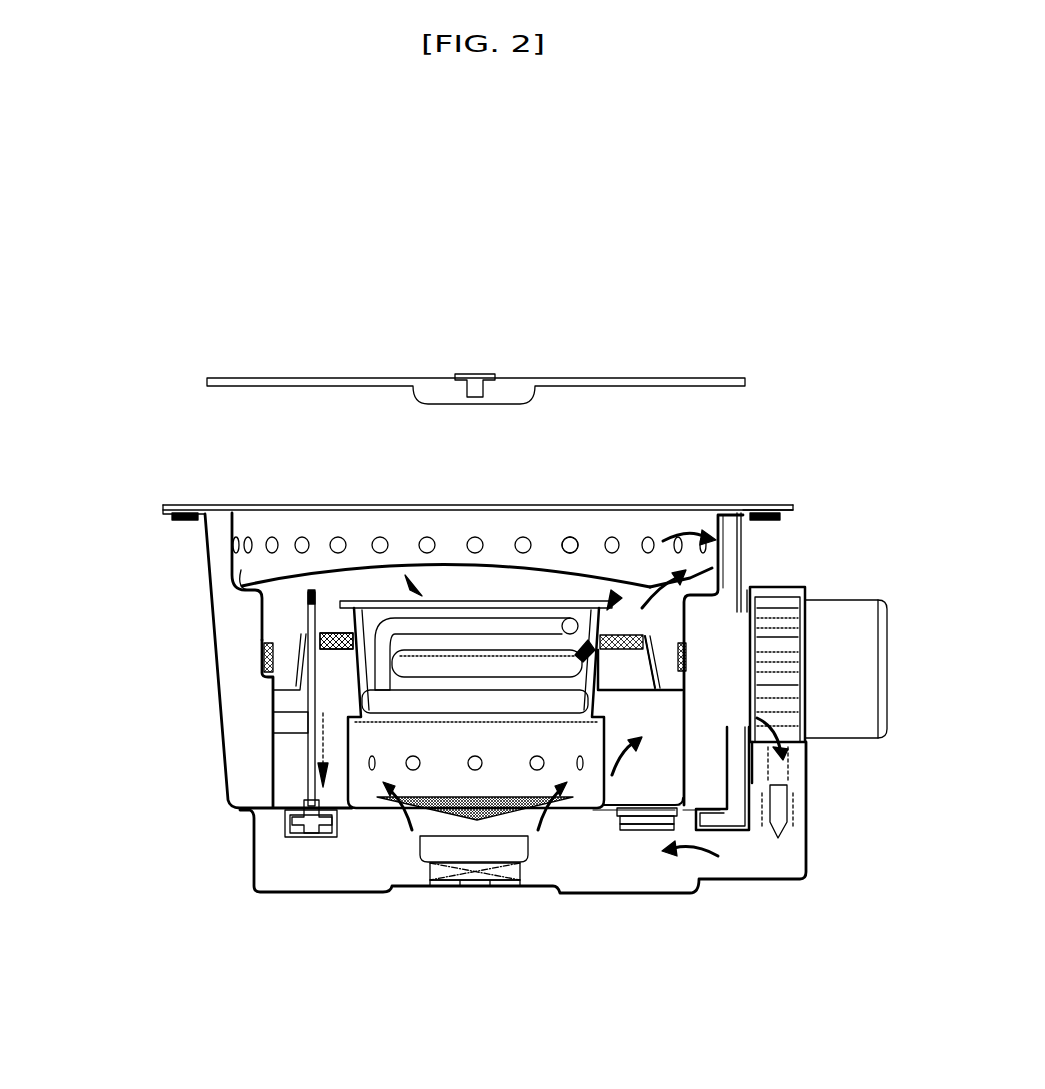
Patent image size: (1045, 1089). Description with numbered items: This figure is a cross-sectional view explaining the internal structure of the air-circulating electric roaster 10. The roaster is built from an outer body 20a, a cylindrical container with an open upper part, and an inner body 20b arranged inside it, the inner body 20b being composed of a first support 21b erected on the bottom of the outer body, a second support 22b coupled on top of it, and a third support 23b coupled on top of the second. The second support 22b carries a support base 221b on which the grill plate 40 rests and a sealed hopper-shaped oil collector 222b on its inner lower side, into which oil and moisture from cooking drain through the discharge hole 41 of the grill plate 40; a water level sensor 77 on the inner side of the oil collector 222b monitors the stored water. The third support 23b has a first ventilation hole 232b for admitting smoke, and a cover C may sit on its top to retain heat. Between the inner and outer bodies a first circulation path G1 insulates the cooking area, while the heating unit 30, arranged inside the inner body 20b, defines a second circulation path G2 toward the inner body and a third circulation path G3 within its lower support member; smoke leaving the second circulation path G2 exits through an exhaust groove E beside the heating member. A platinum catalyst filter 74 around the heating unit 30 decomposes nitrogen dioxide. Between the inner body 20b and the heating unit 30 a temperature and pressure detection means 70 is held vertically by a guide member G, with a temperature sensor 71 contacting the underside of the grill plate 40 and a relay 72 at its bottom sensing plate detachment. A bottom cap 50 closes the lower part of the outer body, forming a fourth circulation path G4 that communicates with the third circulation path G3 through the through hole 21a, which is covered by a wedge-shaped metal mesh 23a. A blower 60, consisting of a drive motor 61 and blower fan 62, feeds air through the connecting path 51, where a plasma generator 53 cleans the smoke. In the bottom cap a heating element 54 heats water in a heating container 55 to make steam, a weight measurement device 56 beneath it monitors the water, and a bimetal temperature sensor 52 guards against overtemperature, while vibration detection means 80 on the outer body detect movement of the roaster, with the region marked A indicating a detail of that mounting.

The air-circulating electric roaster 10 is at (766, 351).
The cover C is at (232, 378).
The detail region A is at (787, 493).
The exhaust groove E is at (618, 592).
The guide member G is at (337, 805).
The first circulation path G1 is at (721, 735).
The second circulation path G2 is at (667, 790).
The third circulation path G3 is at (490, 755).
The fourth circulation path G4 is at (609, 856).
The outer body 20a is at (228, 773).
The inner body 20b is at (113, 592).
The through hole 21a is at (398, 810).
The first support 21b is at (270, 722).
The second support 22b is at (262, 634).
The mesh 23a is at (520, 870).
The third support 23b is at (230, 545).
The support base 221b is at (258, 590).
The oil collector 222b is at (300, 722).
The first ventilation hole 232b is at (597, 547).
The heating unit 30 is at (412, 575).
The grill plate 40 is at (497, 567).
The discharge hole 41 is at (665, 580).
The bottom cap 50 is at (255, 860).
The connecting path 51 is at (808, 803).
The bimetal temperature sensor 52 is at (638, 830).
The plasma generator 53 is at (786, 820).
The heating element 54 is at (478, 882).
The heating container 55 is at (432, 855).
The weight measurement device 56 is at (472, 888).
The blower 60 is at (872, 535).
The drive motor 61 is at (856, 606).
The blower fan 62 is at (786, 608).
The temperature and pressure detection means 70 is at (245, 803).
The temperature sensor 71 is at (306, 598).
The relay 72 is at (311, 830).
The platinum catalyst filter 74 is at (335, 630).
The water level sensor 77 is at (652, 655).
The vibration detection means 80 is at (185, 515).